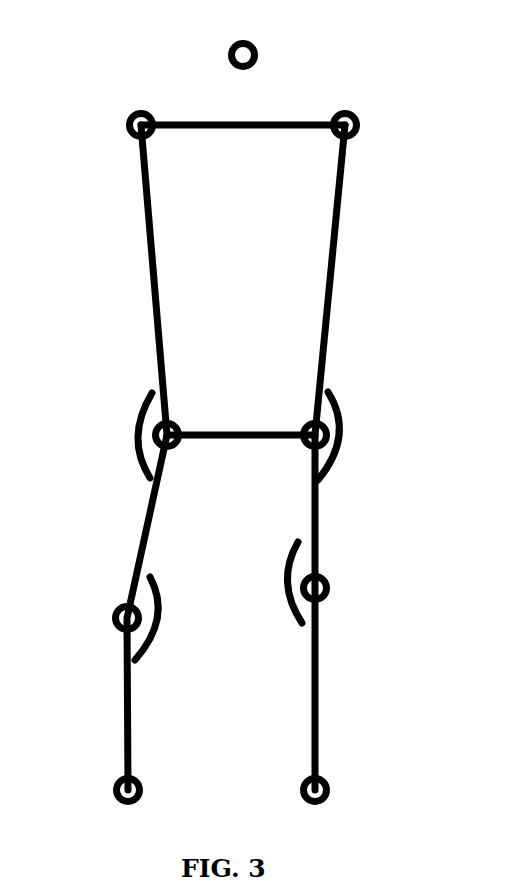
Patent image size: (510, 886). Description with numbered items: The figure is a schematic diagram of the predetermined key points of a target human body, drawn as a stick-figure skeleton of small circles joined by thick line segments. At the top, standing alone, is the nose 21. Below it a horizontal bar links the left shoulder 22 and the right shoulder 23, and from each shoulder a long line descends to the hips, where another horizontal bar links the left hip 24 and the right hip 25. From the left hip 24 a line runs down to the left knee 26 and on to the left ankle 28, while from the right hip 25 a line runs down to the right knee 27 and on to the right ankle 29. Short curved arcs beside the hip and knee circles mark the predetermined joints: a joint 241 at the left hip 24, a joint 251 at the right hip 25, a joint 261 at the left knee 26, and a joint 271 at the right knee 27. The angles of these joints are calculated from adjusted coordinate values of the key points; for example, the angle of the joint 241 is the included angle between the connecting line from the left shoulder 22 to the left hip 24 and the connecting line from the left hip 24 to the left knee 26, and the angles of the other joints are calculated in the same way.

The nose 21 is at (247, 43).
The left shoulder 22 is at (135, 113).
The right shoulder 23 is at (352, 113).
The left hip 24 is at (177, 420).
The joint 241 is at (138, 412).
The right hip 25 is at (309, 422).
The joint 251 is at (340, 406).
The left knee 26 is at (112, 612).
The joint 261 is at (158, 600).
The right knee 27 is at (327, 578).
The joint 271 is at (290, 552).
The left ankle 28 is at (138, 780).
The right ankle 29 is at (320, 780).